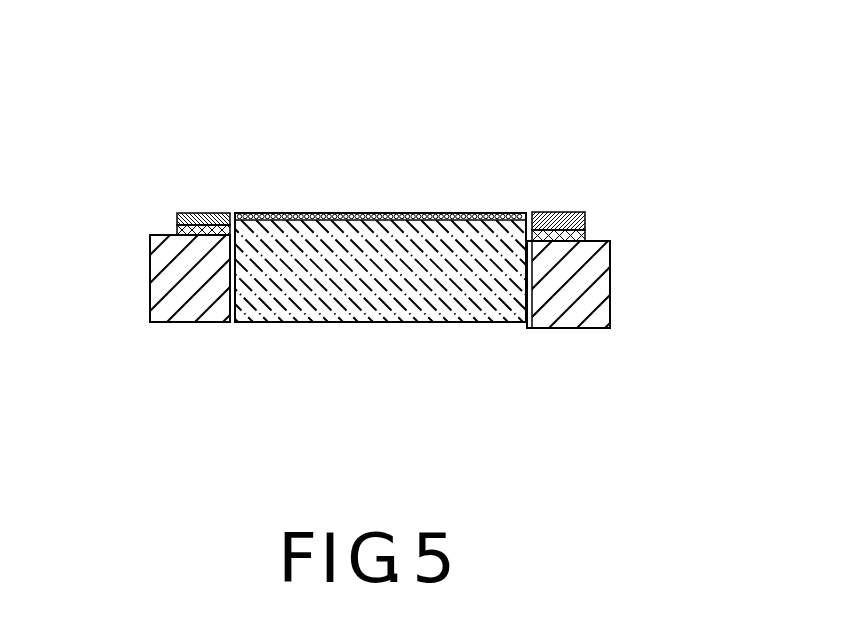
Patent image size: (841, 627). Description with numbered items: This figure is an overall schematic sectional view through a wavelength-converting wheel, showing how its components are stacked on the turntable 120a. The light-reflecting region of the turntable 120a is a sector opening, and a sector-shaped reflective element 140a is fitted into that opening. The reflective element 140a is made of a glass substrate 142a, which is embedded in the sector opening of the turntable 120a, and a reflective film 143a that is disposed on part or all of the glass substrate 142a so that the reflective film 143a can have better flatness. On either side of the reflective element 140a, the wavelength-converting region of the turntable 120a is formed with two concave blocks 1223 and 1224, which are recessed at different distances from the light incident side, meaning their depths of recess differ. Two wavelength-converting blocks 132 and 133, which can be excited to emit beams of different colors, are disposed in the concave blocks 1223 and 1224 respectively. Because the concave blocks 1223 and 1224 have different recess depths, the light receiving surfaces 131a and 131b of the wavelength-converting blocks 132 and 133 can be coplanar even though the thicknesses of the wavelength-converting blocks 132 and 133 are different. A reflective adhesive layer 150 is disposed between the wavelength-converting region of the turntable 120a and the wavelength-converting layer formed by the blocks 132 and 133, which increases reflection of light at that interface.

The turntable 120a is at (191, 308).
The concave block 1223 is at (162, 215).
The concave block 1224 is at (597, 201).
The wavelength-converting block 132 is at (195, 212).
The wavelength-converting block 133 is at (568, 212).
The light receiving surface 131a is at (219, 204).
The light receiving surface 131b is at (536, 205).
The reflective adhesive layer 150 is at (187, 228).
The reflective element 140a is at (374, 163).
The glass substrate 142a is at (330, 242).
The reflective film 143a is at (423, 213).